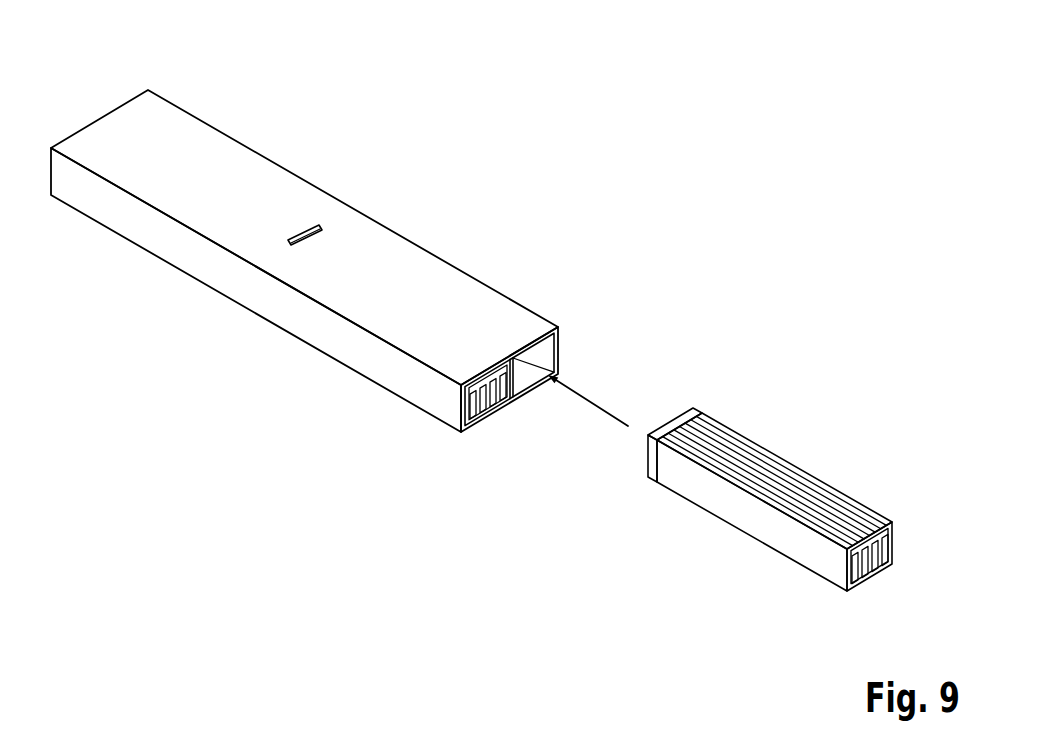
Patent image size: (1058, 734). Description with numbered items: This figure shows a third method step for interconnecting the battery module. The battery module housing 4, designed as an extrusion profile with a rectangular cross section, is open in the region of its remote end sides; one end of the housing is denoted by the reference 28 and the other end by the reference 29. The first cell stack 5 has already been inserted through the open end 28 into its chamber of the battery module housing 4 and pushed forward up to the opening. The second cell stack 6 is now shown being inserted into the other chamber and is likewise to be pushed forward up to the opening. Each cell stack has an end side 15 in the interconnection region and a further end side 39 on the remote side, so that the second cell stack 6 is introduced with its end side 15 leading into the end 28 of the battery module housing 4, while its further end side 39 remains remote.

The battery module housing 4 is at (352, 217).
The end of the battery module housing 29 is at (118, 88).
The end of the battery module housing 28 is at (589, 353).
The first cell stack 5 is at (481, 430).
The end side 15 is at (631, 459).
The second cell stack 6 is at (847, 479).
The further end side 39 is at (888, 593).